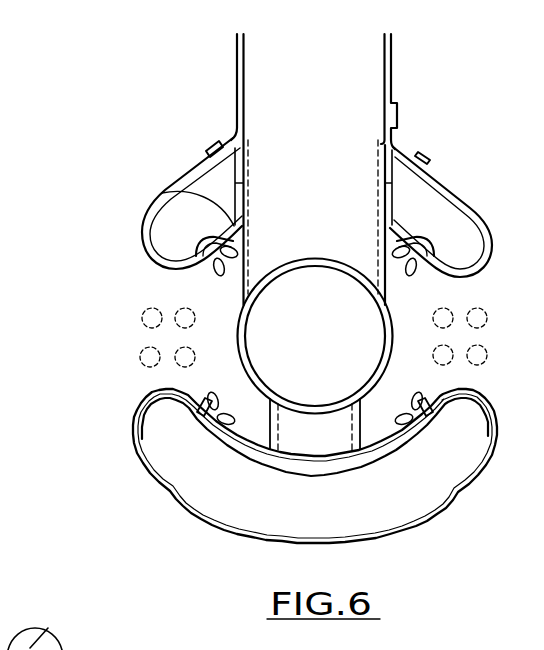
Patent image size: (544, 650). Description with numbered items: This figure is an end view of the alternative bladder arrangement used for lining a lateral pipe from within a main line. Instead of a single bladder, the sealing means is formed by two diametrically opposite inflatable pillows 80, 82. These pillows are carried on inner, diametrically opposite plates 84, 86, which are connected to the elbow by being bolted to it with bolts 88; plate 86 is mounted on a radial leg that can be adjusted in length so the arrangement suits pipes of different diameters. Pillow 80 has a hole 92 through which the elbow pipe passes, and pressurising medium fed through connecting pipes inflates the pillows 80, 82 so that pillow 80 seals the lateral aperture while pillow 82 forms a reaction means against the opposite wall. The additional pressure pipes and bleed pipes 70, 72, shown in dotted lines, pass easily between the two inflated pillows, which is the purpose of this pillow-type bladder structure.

The additional pressure pipes 70 is at (140, 318).
The bleed pipes 72 is at (138, 355).
The inflatable pillow 80 is at (185, 176).
The inflatable pillow 82 is at (171, 489).
The inner plate 84 is at (162, 193).
The inner plate 86 is at (233, 451).
The bolts 88 is at (220, 403).
The hole 92 is at (216, 148).